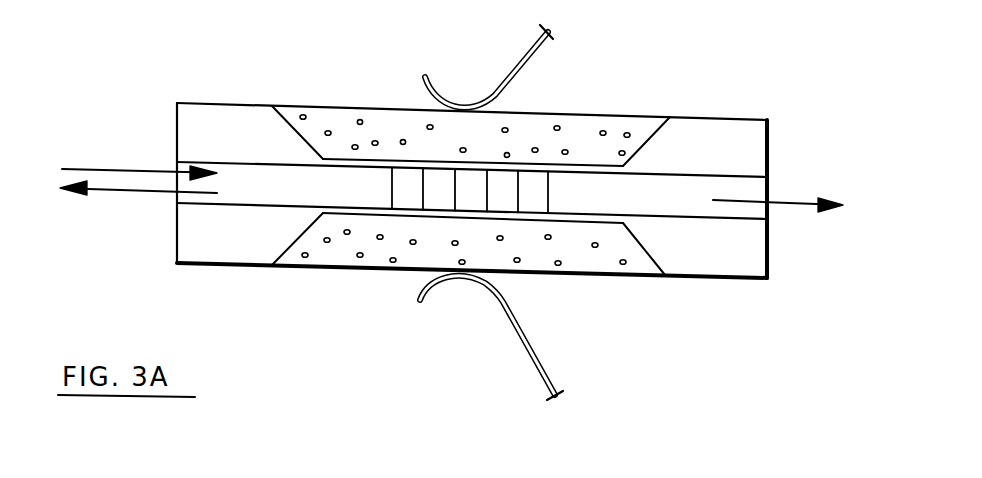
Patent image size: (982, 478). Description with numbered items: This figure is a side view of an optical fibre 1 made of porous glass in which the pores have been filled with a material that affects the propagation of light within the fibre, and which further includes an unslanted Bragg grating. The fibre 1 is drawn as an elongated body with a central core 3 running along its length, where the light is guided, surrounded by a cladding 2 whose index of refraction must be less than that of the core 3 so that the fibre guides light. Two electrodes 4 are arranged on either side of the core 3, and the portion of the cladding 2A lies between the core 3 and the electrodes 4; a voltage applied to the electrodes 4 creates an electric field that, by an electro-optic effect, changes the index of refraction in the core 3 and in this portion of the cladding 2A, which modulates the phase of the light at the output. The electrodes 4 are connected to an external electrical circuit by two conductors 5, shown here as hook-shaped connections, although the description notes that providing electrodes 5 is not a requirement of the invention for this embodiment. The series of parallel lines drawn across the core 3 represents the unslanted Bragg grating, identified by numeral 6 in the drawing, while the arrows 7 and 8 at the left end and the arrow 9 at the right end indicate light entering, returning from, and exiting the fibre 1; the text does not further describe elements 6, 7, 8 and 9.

The fibre 1 is at (725, 282).
The cladding 2 is at (708, 152).
The portion of the cladding 2A is at (572, 168).
The core 3 is at (743, 188).
The electrodes 4 is at (322, 123).
The conductors 5 is at (510, 78).
The grating 6 is at (548, 193).
The inlet flow arrow 7 is at (98, 167).
The return flow arrow 8 is at (112, 198).
The outlet flow arrow 9 is at (807, 204).